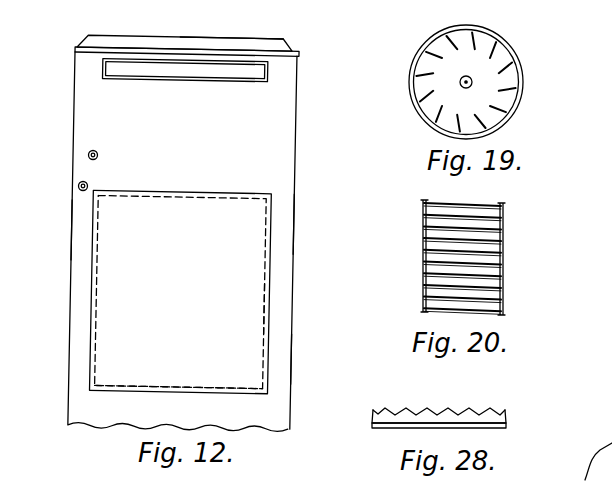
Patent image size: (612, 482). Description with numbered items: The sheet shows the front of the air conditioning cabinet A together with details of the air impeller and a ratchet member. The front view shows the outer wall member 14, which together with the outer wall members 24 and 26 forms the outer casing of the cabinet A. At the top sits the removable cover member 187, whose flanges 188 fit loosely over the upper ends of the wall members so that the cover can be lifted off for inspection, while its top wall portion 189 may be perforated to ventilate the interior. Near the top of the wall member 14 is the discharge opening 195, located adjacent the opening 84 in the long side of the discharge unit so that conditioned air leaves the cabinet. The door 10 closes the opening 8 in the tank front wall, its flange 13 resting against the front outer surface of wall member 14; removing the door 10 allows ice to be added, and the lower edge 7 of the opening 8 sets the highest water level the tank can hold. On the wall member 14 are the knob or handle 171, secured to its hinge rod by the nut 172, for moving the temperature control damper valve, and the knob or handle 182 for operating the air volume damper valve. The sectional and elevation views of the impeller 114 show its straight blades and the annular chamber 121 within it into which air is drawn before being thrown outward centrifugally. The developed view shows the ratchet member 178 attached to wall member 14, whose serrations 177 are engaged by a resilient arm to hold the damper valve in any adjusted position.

In FIG. 12, the outer wall member 14 is at (260, 152).
In FIG. 28, the outer wall member 14 is at (497, 430).
In FIG. 12, the flanges 188 is at (75, 48).
In FIG. 12, the cover member 187 is at (127, 43).
In FIG. 12, the top wall portion 189 is at (192, 37).
In FIG. 12, the discharge opening 195 is at (268, 75).
In FIG. 12, the opening 84 is at (220, 79).
In FIG. 12, the nut 172 is at (95, 150).
In FIG. 12, the knob or handle 171 is at (100, 152).
In FIG. 12, the knob or handle 182 is at (89, 184).
In FIG. 12, the door 10 is at (155, 213).
In FIG. 12, the flange 13 is at (238, 192).
In FIG. 12, the outer wall member 24 is at (70, 235).
In FIG. 12, the outer wall member 26 is at (295, 220).
In FIG. 12, the opening 8 is at (263, 303).
In FIG. 12, the cabinet A is at (290, 345).
In FIG. 12, the lower edge 7 is at (115, 385).
In FIG. 19, the impeller 114 is at (418, 107).
In FIG. 20, the impeller 114 is at (483, 313).
In FIG. 19, the annular space or chamber 121 is at (485, 65).
In FIG. 28, the serrations 177 is at (420, 410).
In FIG. 28, the ratchet member 178 is at (497, 422).